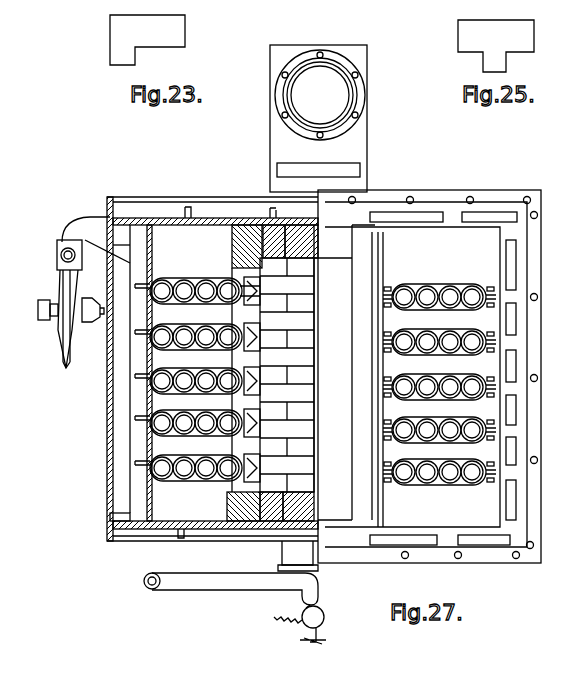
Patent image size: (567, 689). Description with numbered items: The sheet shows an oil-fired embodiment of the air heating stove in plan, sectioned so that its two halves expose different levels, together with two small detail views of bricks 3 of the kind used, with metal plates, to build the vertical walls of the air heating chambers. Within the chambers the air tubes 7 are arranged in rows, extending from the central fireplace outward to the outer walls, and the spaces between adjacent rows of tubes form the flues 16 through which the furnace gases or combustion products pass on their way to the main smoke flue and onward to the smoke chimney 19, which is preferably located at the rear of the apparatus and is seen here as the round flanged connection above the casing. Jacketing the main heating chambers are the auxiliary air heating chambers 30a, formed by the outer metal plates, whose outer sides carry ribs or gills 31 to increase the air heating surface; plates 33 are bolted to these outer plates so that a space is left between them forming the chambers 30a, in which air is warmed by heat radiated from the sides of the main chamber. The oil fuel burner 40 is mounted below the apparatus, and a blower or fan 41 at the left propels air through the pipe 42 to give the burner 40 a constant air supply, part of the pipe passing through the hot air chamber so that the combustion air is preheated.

In FIG. 23, the bricks 3 is at (172, 38).
In FIG. 25, the bricks 3 is at (520, 43).
In FIG. 27, the air tubes 7 is at (470, 242).
In FIG. 27, the flues 16 is at (150, 430).
In FIG. 27, the smoke chimney 19 is at (352, 98).
In FIG. 27, the auxiliary air heating chambers 30a is at (143, 208).
In FIG. 27, the ribs or gills 31 is at (187, 210).
In FIG. 27, the plates 33 is at (240, 198).
In FIG. 27, the oil burner 40 is at (357, 571).
In FIG. 27, the blower or fan 41 is at (67, 292).
In FIG. 27, the pipe 42 is at (233, 590).